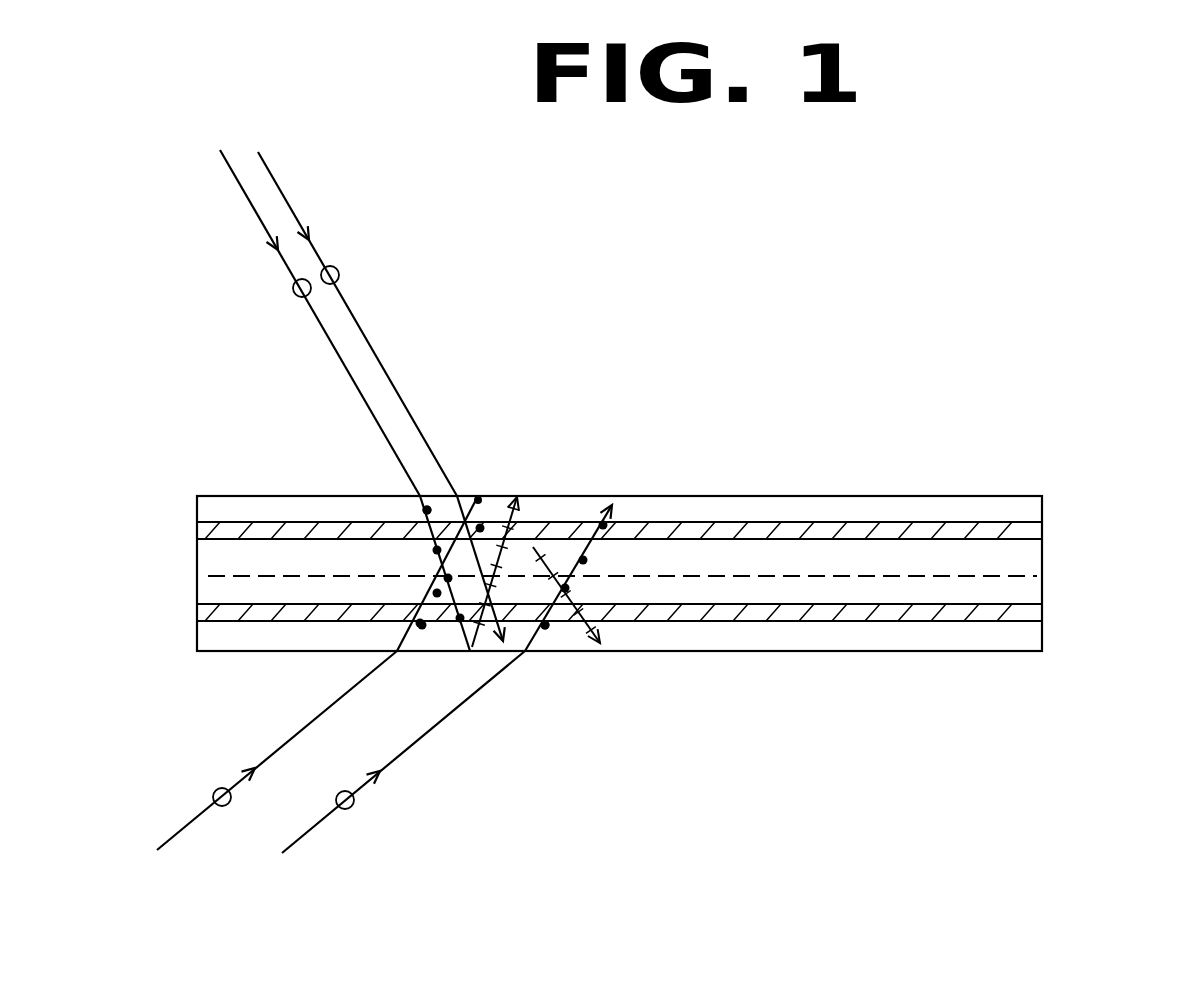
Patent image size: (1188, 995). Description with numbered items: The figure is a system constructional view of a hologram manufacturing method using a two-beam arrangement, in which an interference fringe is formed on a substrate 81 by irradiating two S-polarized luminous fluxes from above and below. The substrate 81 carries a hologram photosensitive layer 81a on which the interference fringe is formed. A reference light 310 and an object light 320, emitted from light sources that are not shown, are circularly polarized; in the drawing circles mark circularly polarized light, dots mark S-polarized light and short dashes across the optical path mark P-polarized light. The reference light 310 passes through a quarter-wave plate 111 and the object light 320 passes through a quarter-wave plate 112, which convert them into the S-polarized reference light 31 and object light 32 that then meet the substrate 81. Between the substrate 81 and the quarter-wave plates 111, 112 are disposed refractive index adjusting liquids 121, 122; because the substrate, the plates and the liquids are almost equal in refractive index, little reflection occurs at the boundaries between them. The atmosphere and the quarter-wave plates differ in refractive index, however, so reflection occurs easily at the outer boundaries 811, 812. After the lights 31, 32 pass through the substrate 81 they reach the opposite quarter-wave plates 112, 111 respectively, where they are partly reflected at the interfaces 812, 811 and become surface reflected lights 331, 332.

The substrate 81 is at (1042, 553).
The hologram photosensitive layer 81a is at (227, 577).
The boundary 811 is at (928, 494).
The boundary 812 is at (923, 652).
The quarter-wave plate 111 is at (986, 510).
The quarter-wave plate 112 is at (218, 637).
The refractive index adjusting liquid 121 is at (205, 532).
The refractive index adjusting liquid 122 is at (1030, 612).
The reference light 310 is at (365, 330).
The object light 320 is at (312, 828).
The reference light 31 is at (427, 510).
The object light 32 is at (418, 624).
The surface reflected light 331 is at (480, 645).
The surface reflected light 332 is at (533, 545).